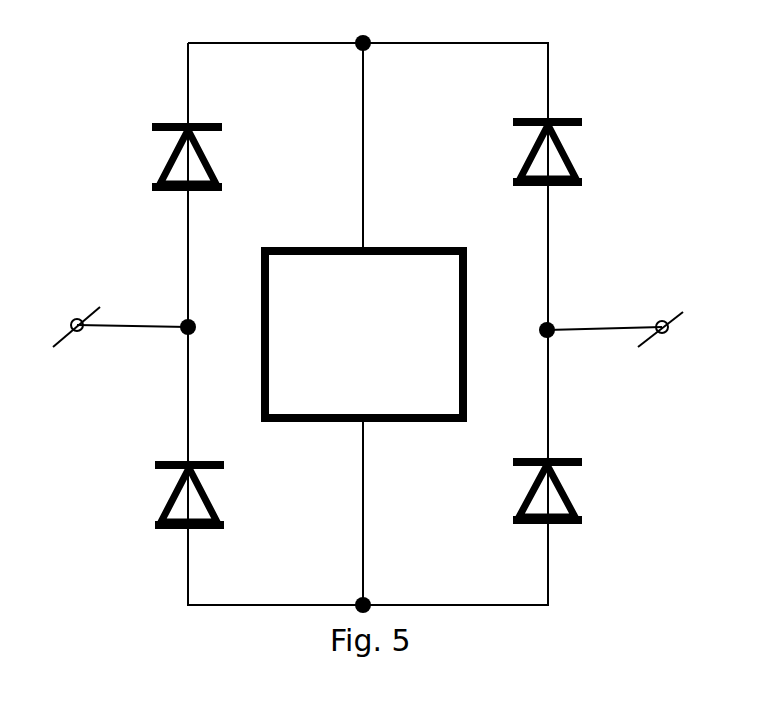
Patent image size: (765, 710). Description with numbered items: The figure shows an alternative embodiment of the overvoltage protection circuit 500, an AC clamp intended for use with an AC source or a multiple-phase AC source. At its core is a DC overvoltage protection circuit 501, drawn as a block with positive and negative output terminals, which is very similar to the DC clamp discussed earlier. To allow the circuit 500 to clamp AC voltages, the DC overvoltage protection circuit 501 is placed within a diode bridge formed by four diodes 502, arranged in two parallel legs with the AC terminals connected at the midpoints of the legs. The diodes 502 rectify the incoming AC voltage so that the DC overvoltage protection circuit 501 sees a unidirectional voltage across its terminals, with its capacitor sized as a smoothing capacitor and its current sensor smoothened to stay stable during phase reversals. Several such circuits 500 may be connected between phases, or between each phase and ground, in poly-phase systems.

The overvoltage protection circuit 500 is at (616, 100).
The DC overvoltage protection circuit 501 is at (379, 335).
The diode 502 is at (166, 166).